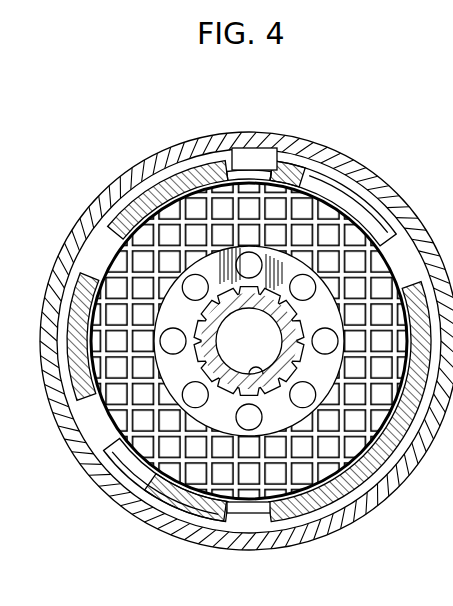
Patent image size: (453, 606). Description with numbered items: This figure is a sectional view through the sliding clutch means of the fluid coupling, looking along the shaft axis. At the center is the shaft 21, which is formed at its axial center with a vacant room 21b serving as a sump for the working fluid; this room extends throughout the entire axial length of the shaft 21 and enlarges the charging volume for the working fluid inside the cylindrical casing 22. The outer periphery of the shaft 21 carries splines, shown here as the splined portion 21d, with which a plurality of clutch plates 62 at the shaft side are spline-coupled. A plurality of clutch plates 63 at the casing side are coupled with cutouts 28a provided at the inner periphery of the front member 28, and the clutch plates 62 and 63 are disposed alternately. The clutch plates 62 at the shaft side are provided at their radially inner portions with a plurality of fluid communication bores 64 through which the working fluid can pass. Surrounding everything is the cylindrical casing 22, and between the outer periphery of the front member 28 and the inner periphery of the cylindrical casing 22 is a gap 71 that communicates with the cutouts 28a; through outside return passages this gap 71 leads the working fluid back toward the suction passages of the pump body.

The shaft 21 is at (236, 395).
The vacant room 21b is at (248, 378).
The splined hub portion 21d is at (283, 390).
The cylindrical casing 22 is at (365, 172).
The front member 28 is at (313, 158).
The cutouts 28a is at (268, 166).
The clutch plates at the shaft side 62 is at (222, 188).
The clutch plates at the casing side 63 is at (100, 253).
The fluid communication bores 64 is at (197, 407).
The gap 71 is at (112, 215).